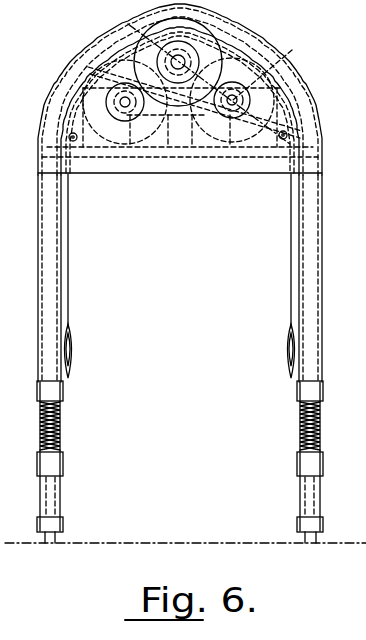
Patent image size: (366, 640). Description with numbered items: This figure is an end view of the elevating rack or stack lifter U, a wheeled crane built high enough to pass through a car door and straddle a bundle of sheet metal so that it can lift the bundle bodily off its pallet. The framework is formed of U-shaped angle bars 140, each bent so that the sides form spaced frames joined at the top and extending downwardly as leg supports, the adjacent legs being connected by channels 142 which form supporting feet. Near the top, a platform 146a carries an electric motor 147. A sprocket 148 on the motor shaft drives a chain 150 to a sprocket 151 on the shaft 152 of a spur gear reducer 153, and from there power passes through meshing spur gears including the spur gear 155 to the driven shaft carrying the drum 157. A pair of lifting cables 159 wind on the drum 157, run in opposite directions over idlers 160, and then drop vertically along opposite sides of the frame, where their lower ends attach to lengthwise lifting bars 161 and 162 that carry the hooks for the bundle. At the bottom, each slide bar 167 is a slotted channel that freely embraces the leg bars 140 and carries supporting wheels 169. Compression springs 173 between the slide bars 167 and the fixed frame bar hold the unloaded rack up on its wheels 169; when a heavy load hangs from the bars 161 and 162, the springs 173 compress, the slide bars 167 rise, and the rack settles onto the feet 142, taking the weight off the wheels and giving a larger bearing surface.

The stack lifter or elevating rack U is at (103, 27).
The drum 157 is at (152, 18).
The spur gear reducer 153 is at (110, 52).
The lifting cables 159 is at (72, 75).
The idlers 160 is at (48, 104).
The spur gear 155 is at (216, 27).
The electric motor 147 is at (224, 84).
The platform 146a is at (120, 150).
The sprocket 151 is at (105, 150).
The shaft of spur gear reducer 152 is at (134, 150).
The chain 150 is at (172, 150).
The sprocket 148 is at (229, 150).
The U-shaped angle bars 140 is at (48, 275).
The lifting bar 161 is at (72, 349).
The lifting bar 162 is at (287, 349).
The compression springs 173 is at (62, 431).
The slide bar 167 is at (64, 463).
The channel forming supporting foot 142 is at (64, 524).
The supporting wheels 169 is at (47, 533).